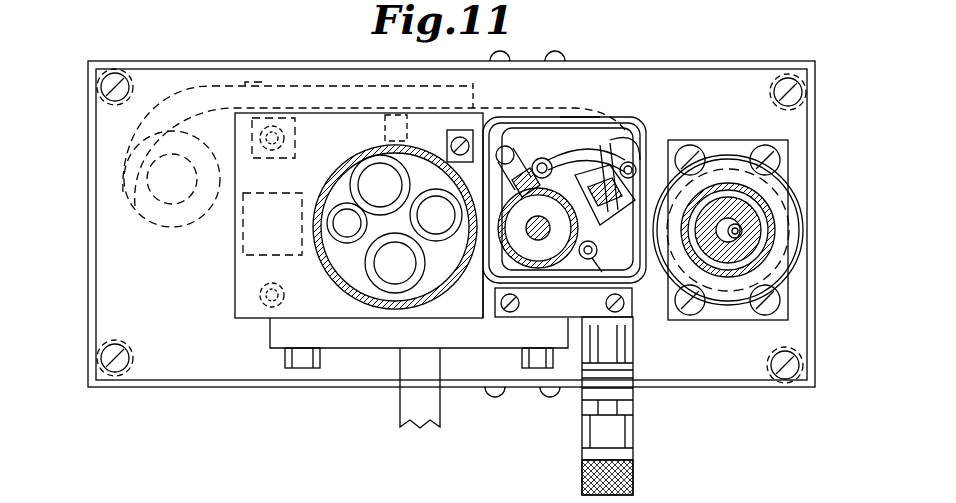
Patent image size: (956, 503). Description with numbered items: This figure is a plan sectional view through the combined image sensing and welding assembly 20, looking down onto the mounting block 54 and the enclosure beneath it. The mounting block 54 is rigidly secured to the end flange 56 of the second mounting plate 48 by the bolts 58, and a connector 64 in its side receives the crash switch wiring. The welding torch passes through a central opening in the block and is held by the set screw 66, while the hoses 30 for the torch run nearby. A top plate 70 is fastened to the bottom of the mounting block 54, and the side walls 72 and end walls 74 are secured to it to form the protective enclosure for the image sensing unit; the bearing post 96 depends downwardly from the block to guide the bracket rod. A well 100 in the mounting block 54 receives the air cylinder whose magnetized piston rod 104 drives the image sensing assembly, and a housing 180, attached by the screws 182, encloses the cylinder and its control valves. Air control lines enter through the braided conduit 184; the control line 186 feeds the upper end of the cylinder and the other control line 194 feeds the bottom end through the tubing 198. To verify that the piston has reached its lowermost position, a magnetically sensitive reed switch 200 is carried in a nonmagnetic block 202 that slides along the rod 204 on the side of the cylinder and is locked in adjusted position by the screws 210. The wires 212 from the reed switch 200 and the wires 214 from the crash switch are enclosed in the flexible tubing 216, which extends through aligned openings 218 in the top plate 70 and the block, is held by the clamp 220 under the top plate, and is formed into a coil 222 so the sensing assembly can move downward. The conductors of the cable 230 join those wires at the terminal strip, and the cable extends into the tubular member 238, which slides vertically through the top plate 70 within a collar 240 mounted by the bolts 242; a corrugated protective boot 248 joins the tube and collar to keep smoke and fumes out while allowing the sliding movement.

The combined image sensing and welding assembly 20 is at (62, 89).
The hoses 30 is at (378, 186).
The second mounting plate 48 is at (400, 425).
The mounting block 54 is at (236, 276).
The end flange 56 is at (372, 350).
The bolts 58 is at (305, 370).
The connector 64 is at (634, 390).
The set screw 66 is at (394, 115).
The top plate 70 is at (108, 312).
The side walls 72 is at (243, 62).
The end walls 74 is at (90, 273).
The bearing post 96 is at (243, 234).
The well 100 is at (590, 117).
The piston rod 104 is at (468, 294).
The housing 180 is at (548, 265).
The screws 182 is at (455, 132).
The braided conduit 184 is at (634, 472).
The control line 186 is at (600, 262).
The control line 194 is at (645, 166).
The tubing 198 is at (502, 130).
The reed switch 200 is at (522, 124).
The nonmagnetic block 202 is at (545, 160).
The rod 204 is at (563, 302).
The screws 210 is at (596, 183).
The wires 212 is at (578, 125).
The wires 214 is at (633, 162).
The flexible tubing 216 is at (345, 85).
The openings 218 is at (630, 125).
The clamp 220 is at (283, 84).
The coil 222 is at (125, 195).
The cable 230 is at (742, 231).
The tubular member 238 is at (775, 252).
The collar 240 is at (760, 200).
The bolts 242 is at (768, 150).
The corrugated protective boot 248 is at (790, 256).